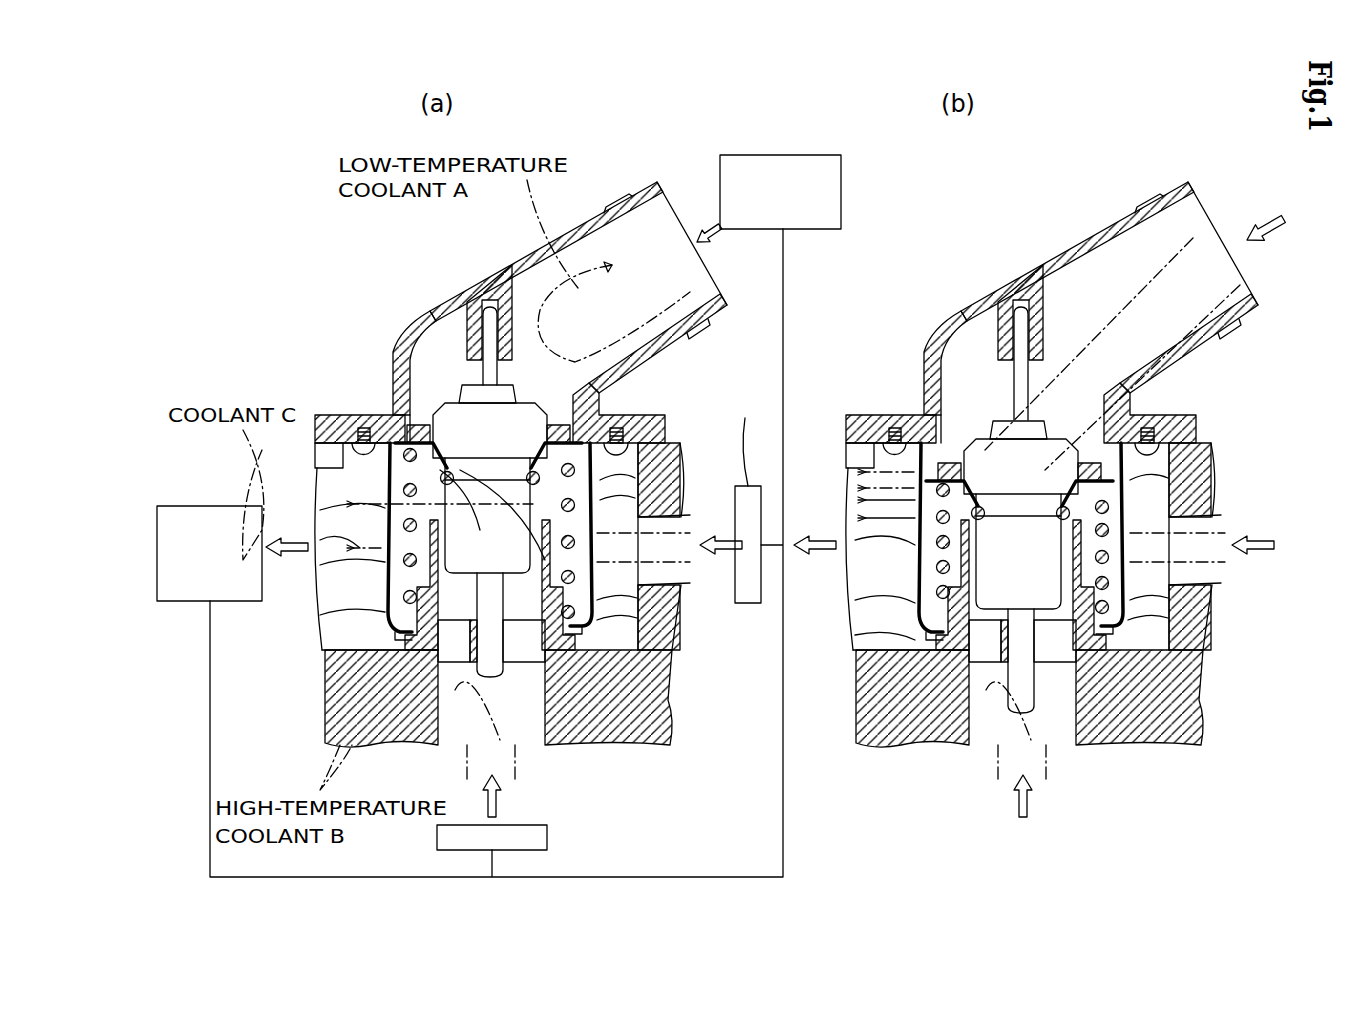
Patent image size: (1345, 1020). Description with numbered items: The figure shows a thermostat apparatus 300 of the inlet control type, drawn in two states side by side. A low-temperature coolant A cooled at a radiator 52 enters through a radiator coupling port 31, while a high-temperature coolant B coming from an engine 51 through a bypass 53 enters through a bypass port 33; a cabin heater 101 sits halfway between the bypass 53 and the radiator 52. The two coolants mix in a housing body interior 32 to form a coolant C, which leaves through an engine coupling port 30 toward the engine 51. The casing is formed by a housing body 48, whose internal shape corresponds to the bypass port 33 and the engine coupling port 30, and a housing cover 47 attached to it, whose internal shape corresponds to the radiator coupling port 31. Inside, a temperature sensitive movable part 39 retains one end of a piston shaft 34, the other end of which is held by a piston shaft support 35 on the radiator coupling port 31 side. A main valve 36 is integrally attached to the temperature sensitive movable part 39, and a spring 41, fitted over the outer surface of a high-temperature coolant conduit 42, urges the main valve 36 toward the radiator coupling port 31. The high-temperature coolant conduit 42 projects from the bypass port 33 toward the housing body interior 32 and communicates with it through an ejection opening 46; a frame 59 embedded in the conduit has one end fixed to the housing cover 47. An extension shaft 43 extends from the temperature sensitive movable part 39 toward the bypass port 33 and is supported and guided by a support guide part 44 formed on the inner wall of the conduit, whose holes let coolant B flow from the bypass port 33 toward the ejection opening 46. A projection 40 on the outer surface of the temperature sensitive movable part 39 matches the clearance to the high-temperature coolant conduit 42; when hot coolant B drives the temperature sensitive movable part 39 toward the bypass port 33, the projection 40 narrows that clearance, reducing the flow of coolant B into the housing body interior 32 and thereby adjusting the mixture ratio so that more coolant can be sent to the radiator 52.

The engine coupling port 30 is at (345, 605).
The radiator coupling port 31 is at (598, 395).
The housing body interior 32 is at (620, 495).
The bypass port 33 is at (450, 735).
The piston shaft 34 is at (489, 320).
The piston shaft support 35 is at (473, 295).
The main valve 36 is at (393, 420).
The temperature sensitive movable part 39 is at (470, 535).
The projection 40 is at (655, 470).
The spring 41 is at (650, 600).
The high-temperature coolant conduit 42 is at (428, 592).
The extension shaft 43 is at (530, 700).
The support guide part 44 is at (365, 680).
The ejection opening 46 is at (565, 470).
The housing cover 47 is at (640, 185).
The housing body 48 is at (650, 695).
The engine 51 is at (207, 506).
The radiator 52 is at (843, 193).
The bypass 53 is at (548, 838).
The frame 59 is at (392, 632).
The cabin heater 101 is at (748, 603).
The thermostat apparatus 300 is at (365, 358).